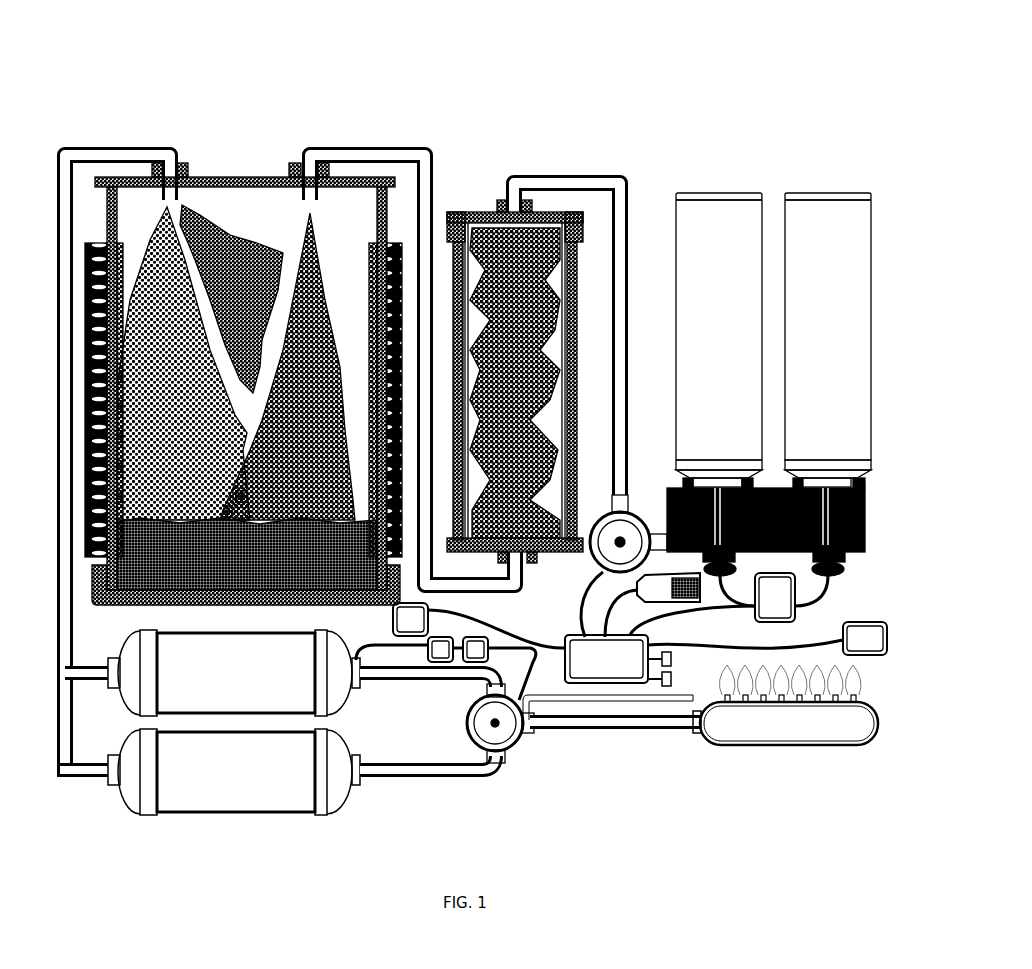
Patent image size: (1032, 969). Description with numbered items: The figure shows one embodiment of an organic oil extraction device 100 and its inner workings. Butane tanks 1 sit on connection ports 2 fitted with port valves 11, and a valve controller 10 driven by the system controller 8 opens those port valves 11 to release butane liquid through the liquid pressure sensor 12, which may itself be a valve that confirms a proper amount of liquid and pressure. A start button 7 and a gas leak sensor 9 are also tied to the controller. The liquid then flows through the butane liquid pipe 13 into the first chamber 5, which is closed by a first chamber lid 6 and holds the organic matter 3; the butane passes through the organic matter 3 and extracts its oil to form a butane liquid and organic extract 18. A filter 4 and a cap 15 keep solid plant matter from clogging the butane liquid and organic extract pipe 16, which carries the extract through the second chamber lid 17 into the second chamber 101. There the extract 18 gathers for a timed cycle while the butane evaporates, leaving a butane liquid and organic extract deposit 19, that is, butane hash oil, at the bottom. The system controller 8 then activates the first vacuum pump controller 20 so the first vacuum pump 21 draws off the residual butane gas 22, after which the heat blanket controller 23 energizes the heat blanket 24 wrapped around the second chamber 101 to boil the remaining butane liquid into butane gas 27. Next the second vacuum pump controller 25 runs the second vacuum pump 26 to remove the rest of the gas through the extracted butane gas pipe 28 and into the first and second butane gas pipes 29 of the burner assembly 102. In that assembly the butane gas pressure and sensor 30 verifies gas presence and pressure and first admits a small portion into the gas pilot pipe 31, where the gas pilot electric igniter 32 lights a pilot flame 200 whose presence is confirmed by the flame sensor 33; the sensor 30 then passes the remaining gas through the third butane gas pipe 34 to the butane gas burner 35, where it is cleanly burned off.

The organic oil extraction device 100 is at (818, 88).
The butane tanks 1 is at (740, 195).
The connection ports 2 is at (865, 525).
The organic matter 3 is at (523, 380).
The filter 4 is at (578, 242).
The first chamber 5 is at (578, 306).
The first chamber lid 6 is at (480, 212).
The start button 7 is at (888, 638).
The system controller 8 is at (575, 648).
The gas leak sensor 9 is at (660, 586).
The valve controller 10 is at (786, 600).
The port valves 11 is at (736, 569).
The liquid pressure sensor 12 is at (630, 520).
The butane liquid pipe 13 is at (622, 183).
The cap 15 is at (560, 553).
The butane liquid and organic extract pipe 16 is at (433, 157).
The second chamber lid 17 is at (224, 177).
The butane liquid and organic extract 18 is at (270, 375).
The butane liquid and organic extract deposit 19 is at (272, 600).
The first vacuum pump controller 20 is at (445, 647).
The first vacuum pump 21 is at (352, 680).
The residual butane gas 22 is at (242, 235).
The heat blanket controller 23 is at (393, 617).
The heat blanket 24 is at (97, 252).
The second vacuum pump controller 25 is at (480, 647).
The second vacuum pump 26 is at (290, 805).
The butane gas 27 is at (238, 440).
The extracted butane gas pipe 28 is at (58, 345).
The first and second butane gas pipes 29 is at (417, 681).
The butane gas pressure and sensor 30 is at (505, 740).
The gas pilot pipe 31 is at (540, 695).
The gas pilot electric igniter 32 is at (672, 679).
The flame sensor 33 is at (672, 658).
The third butane gas pipe 34 is at (652, 728).
The butane gas burner 35 is at (855, 733).
The second chamber 101 is at (241, 388).
The burner assembly 102 is at (713, 736).
The pilot flame 200 is at (628, 716).